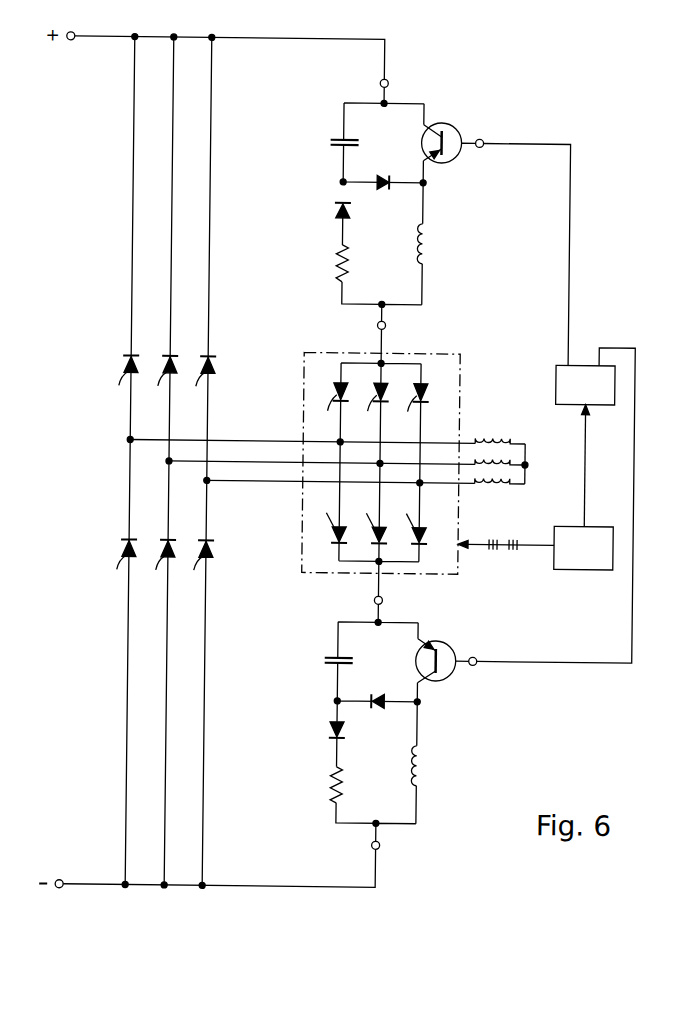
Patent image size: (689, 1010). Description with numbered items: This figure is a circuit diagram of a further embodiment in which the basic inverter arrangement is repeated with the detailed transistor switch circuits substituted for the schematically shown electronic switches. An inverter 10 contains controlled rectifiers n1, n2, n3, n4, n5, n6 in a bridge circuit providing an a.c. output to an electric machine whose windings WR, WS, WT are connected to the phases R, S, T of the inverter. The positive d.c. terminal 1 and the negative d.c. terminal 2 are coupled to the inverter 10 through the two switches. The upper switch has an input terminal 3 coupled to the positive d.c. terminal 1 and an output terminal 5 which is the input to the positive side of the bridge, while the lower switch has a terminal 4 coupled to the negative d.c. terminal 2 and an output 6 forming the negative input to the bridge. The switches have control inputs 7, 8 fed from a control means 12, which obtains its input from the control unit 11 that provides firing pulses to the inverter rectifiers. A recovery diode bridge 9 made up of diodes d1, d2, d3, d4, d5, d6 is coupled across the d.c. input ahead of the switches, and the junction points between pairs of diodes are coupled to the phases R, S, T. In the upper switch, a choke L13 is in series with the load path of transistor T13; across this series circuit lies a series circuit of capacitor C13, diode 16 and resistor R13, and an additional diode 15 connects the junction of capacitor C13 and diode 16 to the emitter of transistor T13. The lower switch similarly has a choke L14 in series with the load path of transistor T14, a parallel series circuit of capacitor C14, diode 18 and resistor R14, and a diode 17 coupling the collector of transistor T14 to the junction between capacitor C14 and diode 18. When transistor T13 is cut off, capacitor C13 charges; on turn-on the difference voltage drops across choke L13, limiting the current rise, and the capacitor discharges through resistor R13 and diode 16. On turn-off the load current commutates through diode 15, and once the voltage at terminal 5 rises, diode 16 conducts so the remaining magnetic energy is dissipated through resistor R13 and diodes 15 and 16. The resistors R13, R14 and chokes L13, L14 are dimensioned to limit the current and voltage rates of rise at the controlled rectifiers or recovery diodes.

The positive d.c. terminal 1 is at (71, 23).
The negative d.c. terminal 2 is at (58, 896).
The input terminal of switch 3 is at (392, 83).
The terminal of switch 4 is at (368, 845).
The output terminal of switch 5 is at (373, 325).
The output of switch 6 is at (385, 600).
The control input 7 is at (481, 155).
The control input 8 is at (474, 676).
The recovery diode bridge 9 is at (156, 460).
The inverter 10 is at (365, 462).
The control unit 11 is at (583, 548).
The control means 12 is at (585, 385).
The diode 15 is at (376, 176).
The diode 16 is at (330, 214).
The diode 17 is at (375, 710).
The diode 18 is at (332, 727).
The capacitor C13 is at (337, 139).
The transistor T13 is at (454, 126).
The choke L13 is at (427, 242).
The resistor R13 is at (335, 267).
The capacitor C14 is at (336, 657).
The transistor T14 is at (447, 645).
The choke L14 is at (428, 748).
The resistor R14 is at (335, 787).
The recovery diode d1 is at (117, 564).
The recovery diode d2 is at (199, 381).
The recovery diode d3 is at (157, 565).
The recovery diode d4 is at (119, 380).
The recovery diode d5 is at (196, 565).
The recovery diode d6 is at (160, 381).
The controlled rectifier n1 is at (330, 407).
The controlled rectifier n2 is at (406, 520).
The controlled rectifier n3 is at (369, 407).
The controlled rectifier n4 is at (326, 520).
The controlled rectifier n5 is at (409, 407).
The controlled rectifier n6 is at (366, 520).
The phase R is at (245, 441).
The phase S is at (275, 462).
The phase T is at (258, 483).
The winding WR is at (479, 437).
The winding WS is at (514, 473).
The winding WT is at (486, 491).